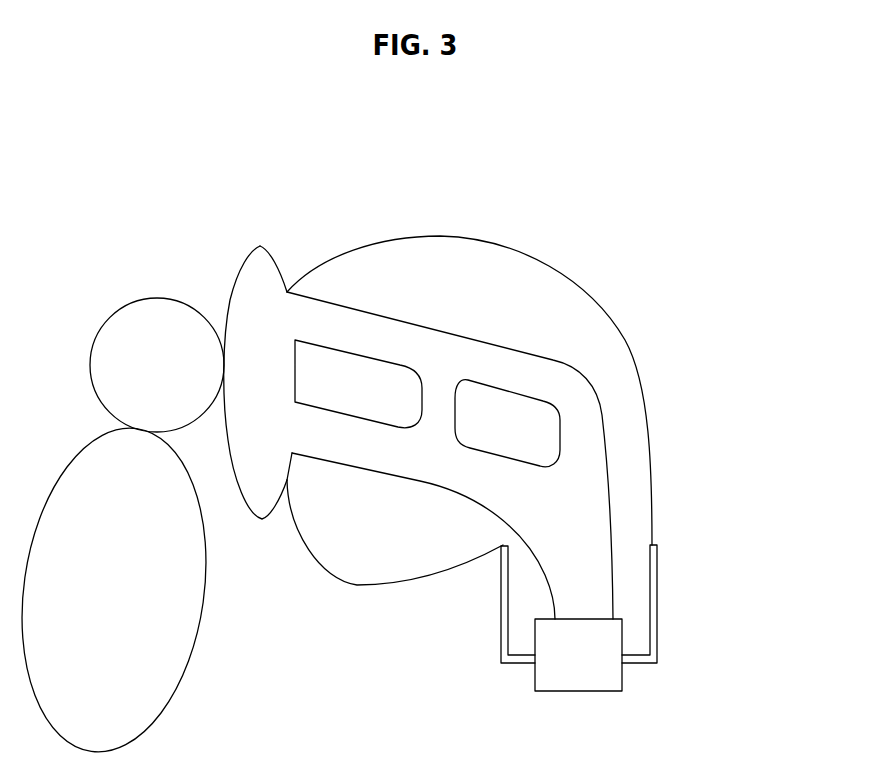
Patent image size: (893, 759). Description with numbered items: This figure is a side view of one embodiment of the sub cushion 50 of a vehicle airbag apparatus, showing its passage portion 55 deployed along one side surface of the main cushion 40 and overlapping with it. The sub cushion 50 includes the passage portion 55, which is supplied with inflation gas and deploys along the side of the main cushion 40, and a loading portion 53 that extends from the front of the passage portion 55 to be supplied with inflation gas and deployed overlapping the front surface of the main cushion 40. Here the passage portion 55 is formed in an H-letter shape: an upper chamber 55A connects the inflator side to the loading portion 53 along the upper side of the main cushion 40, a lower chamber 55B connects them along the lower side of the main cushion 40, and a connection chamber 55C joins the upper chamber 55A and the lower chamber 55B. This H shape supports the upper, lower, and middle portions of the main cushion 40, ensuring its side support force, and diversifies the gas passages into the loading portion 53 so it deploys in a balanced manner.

The main cushion 40 is at (603, 313).
The sub cushion 50 is at (305, 142).
The loading portion 53 is at (260, 246).
The passage portion 55 is at (393, 306).
The upper chamber 55A is at (467, 352).
The lower chamber 55B is at (438, 458).
The connection chamber 55C is at (442, 403).